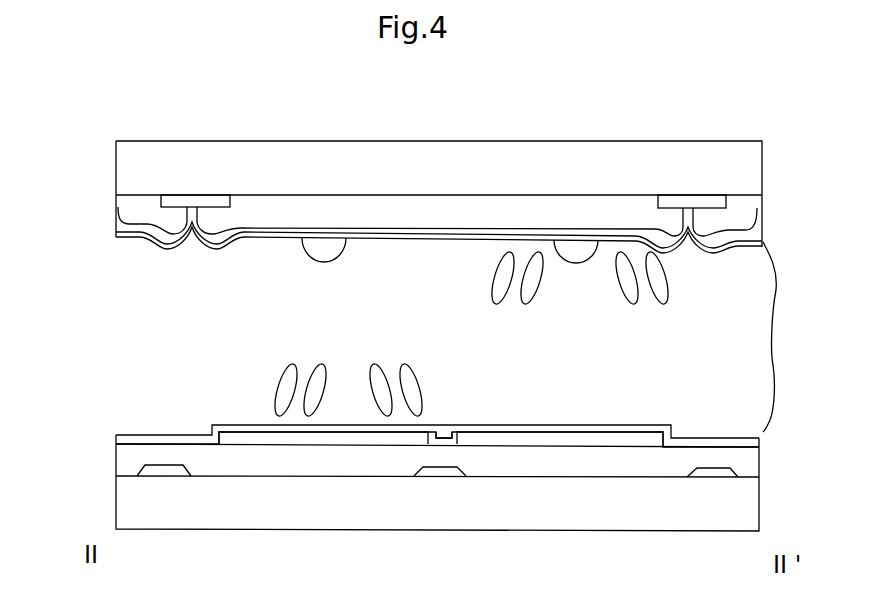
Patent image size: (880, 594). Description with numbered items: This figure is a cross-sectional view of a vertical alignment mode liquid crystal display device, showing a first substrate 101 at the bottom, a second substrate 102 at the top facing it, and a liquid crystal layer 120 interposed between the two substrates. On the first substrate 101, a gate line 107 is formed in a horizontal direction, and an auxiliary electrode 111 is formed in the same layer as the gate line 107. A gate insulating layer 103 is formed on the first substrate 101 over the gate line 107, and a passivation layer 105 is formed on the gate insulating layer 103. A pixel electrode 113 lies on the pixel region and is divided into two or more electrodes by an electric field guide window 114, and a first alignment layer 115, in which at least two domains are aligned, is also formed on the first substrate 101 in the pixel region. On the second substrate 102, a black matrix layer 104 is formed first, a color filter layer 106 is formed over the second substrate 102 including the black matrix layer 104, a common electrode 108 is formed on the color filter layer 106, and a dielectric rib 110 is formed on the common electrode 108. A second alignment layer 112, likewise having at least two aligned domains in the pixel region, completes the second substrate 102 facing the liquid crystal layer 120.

The first substrate 101 is at (748, 514).
The second substrate 102 is at (748, 153).
The gate insulating layer 103 is at (752, 462).
The black matrix layer 104 is at (702, 200).
The passivation layer 105 is at (117, 450).
The color filter layer 106 is at (587, 210).
The gate line 107 is at (163, 467).
The common electrode 108 is at (723, 245).
The dielectric rib 110 is at (325, 245).
The auxiliary electrode 111 is at (445, 470).
The second alignment layer 112 is at (170, 248).
The pixel electrode 113 is at (237, 438).
The electric field guide window 114 is at (443, 426).
The first alignment layer 115 is at (617, 430).
The liquid crystal layer 120 is at (542, 337).